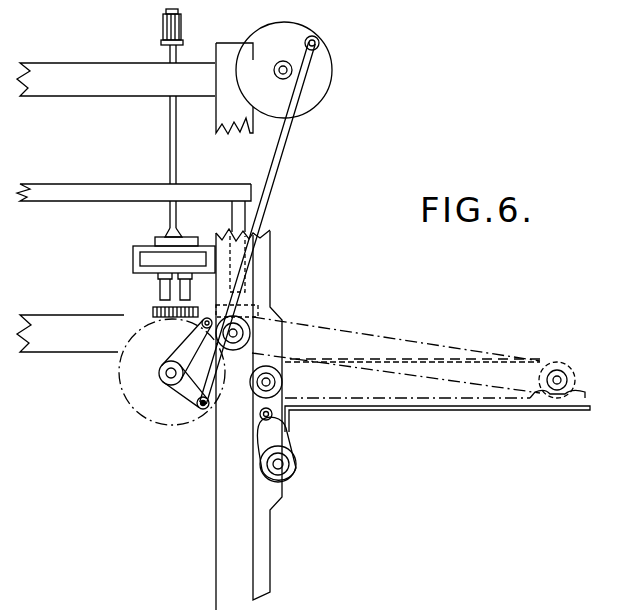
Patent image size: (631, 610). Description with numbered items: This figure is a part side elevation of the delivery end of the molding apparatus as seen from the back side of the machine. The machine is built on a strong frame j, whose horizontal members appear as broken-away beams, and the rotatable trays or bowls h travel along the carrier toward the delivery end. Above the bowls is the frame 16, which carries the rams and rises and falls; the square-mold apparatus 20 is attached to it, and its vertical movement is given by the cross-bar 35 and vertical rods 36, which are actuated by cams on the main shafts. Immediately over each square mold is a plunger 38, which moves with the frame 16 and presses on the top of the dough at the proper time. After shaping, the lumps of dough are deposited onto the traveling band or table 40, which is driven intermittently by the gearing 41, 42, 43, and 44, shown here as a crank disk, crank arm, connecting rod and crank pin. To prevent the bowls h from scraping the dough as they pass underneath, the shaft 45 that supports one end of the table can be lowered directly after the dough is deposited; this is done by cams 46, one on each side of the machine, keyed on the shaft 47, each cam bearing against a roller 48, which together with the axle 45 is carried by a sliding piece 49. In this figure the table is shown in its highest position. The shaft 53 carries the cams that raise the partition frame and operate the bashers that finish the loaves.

The frame 16 is at (209, 192).
The special apparatus 20 is at (170, 265).
The cross-bar 35 is at (182, 32).
The vertical rods 36 is at (170, 146).
The plunger 38 is at (233, 214).
The traveling band or table 40 is at (466, 360).
The gearing 41 is at (172, 372).
The gearing 42 is at (195, 325).
The gearing 43 is at (270, 170).
The gearing 44 is at (320, 41).
The shaft 45 is at (282, 382).
The cams 46 is at (291, 452).
The shaft 47 is at (282, 470).
The roller 48 is at (272, 414).
The sliding piece 49 is at (275, 337).
The shaft 53 is at (281, 70).
The rotatable trays or bowls h is at (155, 309).
The frame j is at (134, 281).